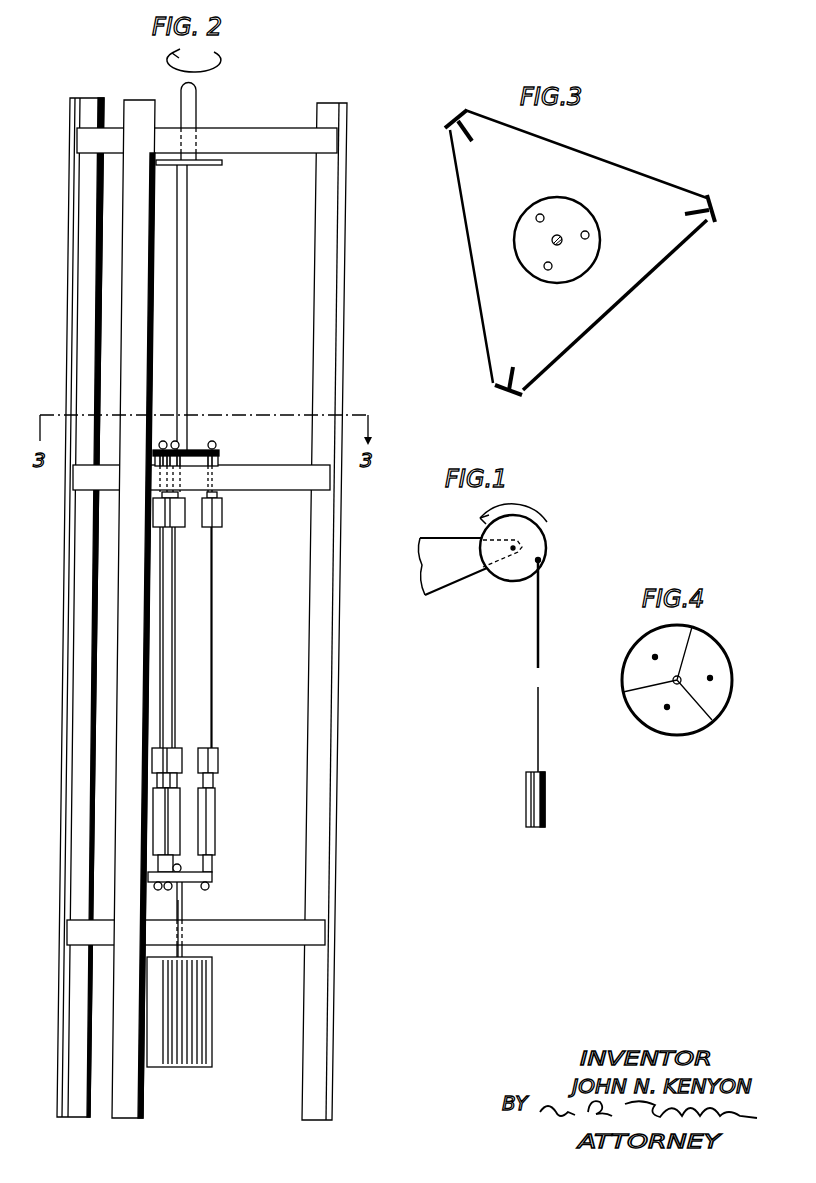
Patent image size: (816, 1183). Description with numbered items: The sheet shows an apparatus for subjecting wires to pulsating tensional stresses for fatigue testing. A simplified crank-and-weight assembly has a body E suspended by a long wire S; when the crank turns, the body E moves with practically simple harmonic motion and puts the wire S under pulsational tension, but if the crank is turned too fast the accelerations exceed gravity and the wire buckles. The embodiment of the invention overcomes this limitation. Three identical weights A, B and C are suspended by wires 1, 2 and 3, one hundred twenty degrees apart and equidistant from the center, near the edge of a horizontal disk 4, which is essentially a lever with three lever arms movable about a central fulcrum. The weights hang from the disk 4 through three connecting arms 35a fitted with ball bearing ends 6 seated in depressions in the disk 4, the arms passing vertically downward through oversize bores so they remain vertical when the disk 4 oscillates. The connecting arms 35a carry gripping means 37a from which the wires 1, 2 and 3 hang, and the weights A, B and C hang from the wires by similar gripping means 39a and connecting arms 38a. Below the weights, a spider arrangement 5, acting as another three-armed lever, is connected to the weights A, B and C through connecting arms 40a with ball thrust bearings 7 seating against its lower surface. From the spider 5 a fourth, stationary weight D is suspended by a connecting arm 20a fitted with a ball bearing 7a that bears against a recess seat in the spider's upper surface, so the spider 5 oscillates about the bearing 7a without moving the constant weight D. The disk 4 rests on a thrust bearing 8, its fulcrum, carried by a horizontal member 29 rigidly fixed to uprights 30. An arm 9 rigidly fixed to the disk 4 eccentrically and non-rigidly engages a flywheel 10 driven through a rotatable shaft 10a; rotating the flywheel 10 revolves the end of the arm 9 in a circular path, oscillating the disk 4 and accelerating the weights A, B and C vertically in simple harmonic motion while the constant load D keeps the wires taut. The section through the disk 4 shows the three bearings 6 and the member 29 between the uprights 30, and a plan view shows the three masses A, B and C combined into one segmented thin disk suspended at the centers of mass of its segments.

In FIG. 2, the wire 1 is at (163, 577).
In FIG. 2, the wire 2 is at (176, 620).
In FIG. 2, the wire 3 is at (213, 603).
In FIG. 2, the horizontal disk 4 is at (220, 452).
In FIG. 3, the horizontal disk 4 is at (527, 252).
In FIG. 2, the spider arrangement 5 is at (186, 883).
In FIG. 2, the ball bearing ends 6 is at (175, 441).
In FIG. 3, the ball bearing ends 6 is at (538, 217).
In FIG. 2, the ball thrust bearings 7 is at (158, 890).
In FIG. 2, the ball bearing 7a is at (212, 874).
In FIG. 2, the thrust bearing 8 is at (187, 462).
In FIG. 2, the arm 9 is at (186, 250).
In FIG. 3, the arm 9 is at (559, 238).
In FIG. 2, the flywheel 10 is at (205, 166).
In FIG. 2, the rotatable shaft 10a is at (197, 100).
In FIG. 2, the connecting arm 20a is at (182, 910).
In FIG. 2, the horizontal member 29 is at (268, 484).
In FIG. 3, the horizontal member 29 is at (575, 323).
In FIG. 2, the uprights 30 is at (130, 638).
In FIG. 3, the uprights 30 is at (460, 115).
In FIG. 2, the connecting arms 35a is at (213, 491).
In FIG. 2, the gripping means 37a is at (213, 528).
In FIG. 2, the connecting arms 38a is at (215, 778).
In FIG. 2, the gripping means 39a is at (212, 746).
In FIG. 2, the connecting arms 40a is at (177, 862).
In FIG. 2, the weight A is at (178, 815).
In FIG. 4, the weight A is at (657, 713).
In FIG. 2, the weight B is at (153, 822).
In FIG. 4, the weight B is at (647, 653).
In FIG. 2, the weight C is at (215, 820).
In FIG. 4, the weight C is at (717, 668).
In FIG. 2, the stationary weight D is at (212, 1017).
In FIG. 1, the body E is at (528, 797).
In FIG. 1, the wire S is at (533, 697).